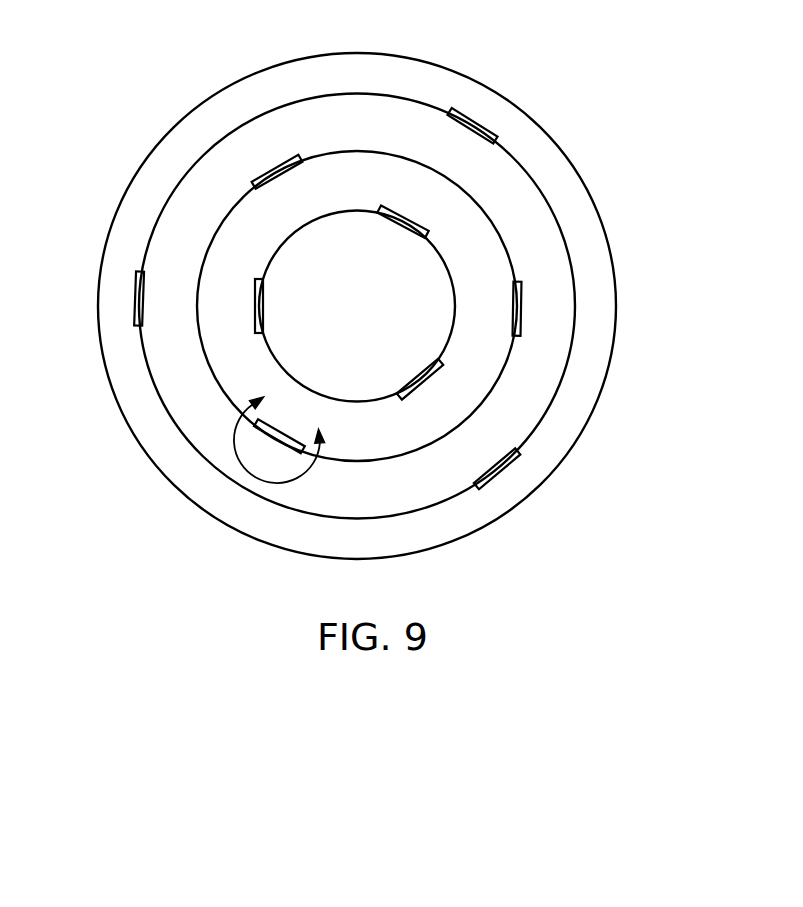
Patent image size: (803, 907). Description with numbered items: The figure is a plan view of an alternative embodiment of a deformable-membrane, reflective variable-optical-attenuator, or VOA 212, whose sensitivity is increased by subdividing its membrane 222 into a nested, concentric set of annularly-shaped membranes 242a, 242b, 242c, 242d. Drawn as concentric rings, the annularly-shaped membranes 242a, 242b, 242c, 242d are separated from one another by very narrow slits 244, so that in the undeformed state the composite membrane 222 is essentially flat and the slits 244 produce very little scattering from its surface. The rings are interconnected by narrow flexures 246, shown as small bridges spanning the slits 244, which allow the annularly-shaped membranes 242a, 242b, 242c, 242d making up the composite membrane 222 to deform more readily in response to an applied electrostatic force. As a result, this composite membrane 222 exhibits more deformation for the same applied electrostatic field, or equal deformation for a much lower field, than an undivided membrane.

The VOA 212 is at (127, 213).
The membrane 222 is at (412, 545).
The slits 244 is at (329, 93).
The annularly-shaped membrane 242a is at (393, 320).
The annularly-shaped membrane 242b is at (498, 363).
The annularly-shaped membrane 242c is at (555, 257).
The annularly-shaped membrane 242d is at (572, 183).
The flexures 246 is at (478, 121).